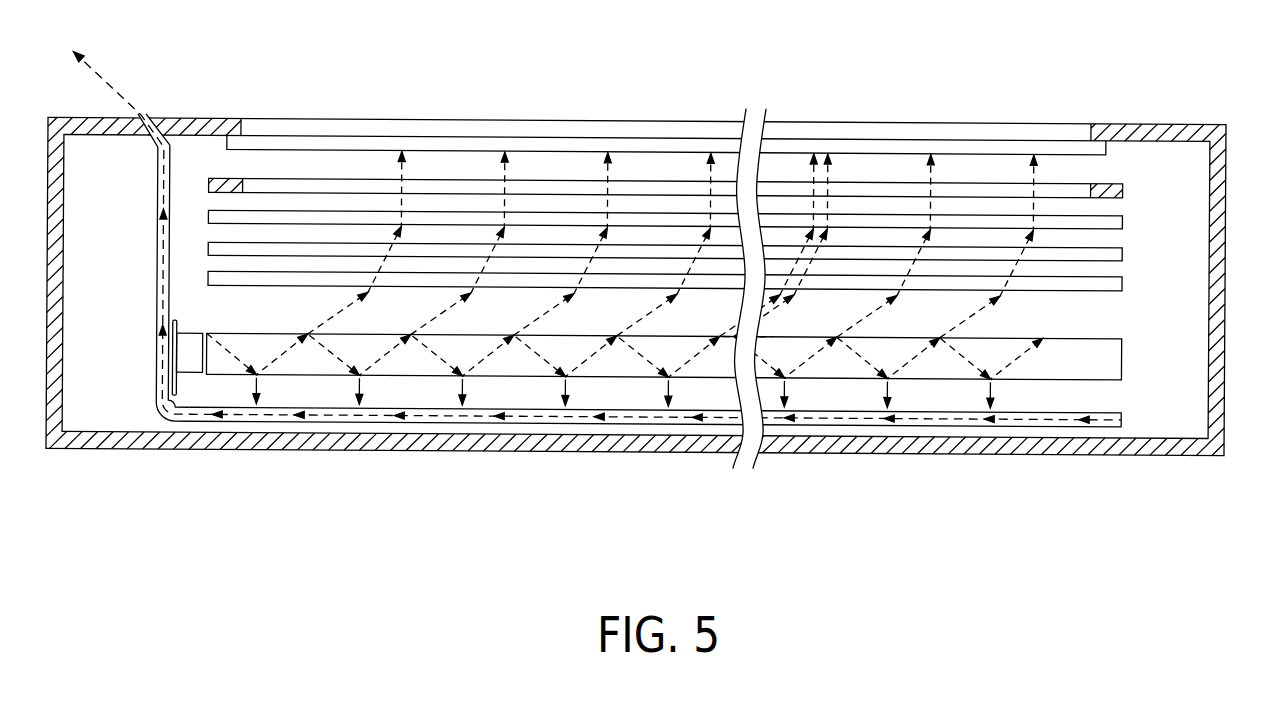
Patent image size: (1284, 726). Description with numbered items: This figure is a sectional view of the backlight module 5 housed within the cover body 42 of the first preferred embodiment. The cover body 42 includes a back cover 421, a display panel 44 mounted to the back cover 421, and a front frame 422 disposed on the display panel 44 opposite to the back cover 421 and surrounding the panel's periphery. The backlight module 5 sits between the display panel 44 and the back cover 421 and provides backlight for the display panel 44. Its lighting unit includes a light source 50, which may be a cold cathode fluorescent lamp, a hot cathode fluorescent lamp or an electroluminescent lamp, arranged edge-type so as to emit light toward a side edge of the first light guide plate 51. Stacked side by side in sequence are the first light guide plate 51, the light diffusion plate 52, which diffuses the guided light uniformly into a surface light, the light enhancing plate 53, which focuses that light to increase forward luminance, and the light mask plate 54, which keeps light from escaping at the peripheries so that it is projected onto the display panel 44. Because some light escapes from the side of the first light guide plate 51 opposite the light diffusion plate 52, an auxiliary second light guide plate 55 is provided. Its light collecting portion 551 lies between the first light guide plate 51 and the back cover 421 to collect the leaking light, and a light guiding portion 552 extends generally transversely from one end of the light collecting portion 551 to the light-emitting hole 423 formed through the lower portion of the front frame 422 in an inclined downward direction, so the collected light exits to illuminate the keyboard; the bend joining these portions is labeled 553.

The cover body 42 is at (658, 290).
The back cover 421 is at (1125, 455).
The front frame 422 is at (210, 130).
The light-emitting hole 423 is at (142, 120).
The display panel 44 is at (1075, 147).
The backlight module 5 is at (715, 281).
The light source 50 is at (188, 347).
The first light guide plate 51 is at (1115, 365).
The light diffusion plate 52 is at (1118, 287).
The light enhancing plate 53 is at (1113, 257).
The light mask plate 54 is at (1120, 190).
The second light guide plate 55 is at (634, 282).
The light collecting portion 551 is at (648, 417).
The light guiding portion 552 is at (158, 322).
The bend section of pipe 553 is at (207, 410).